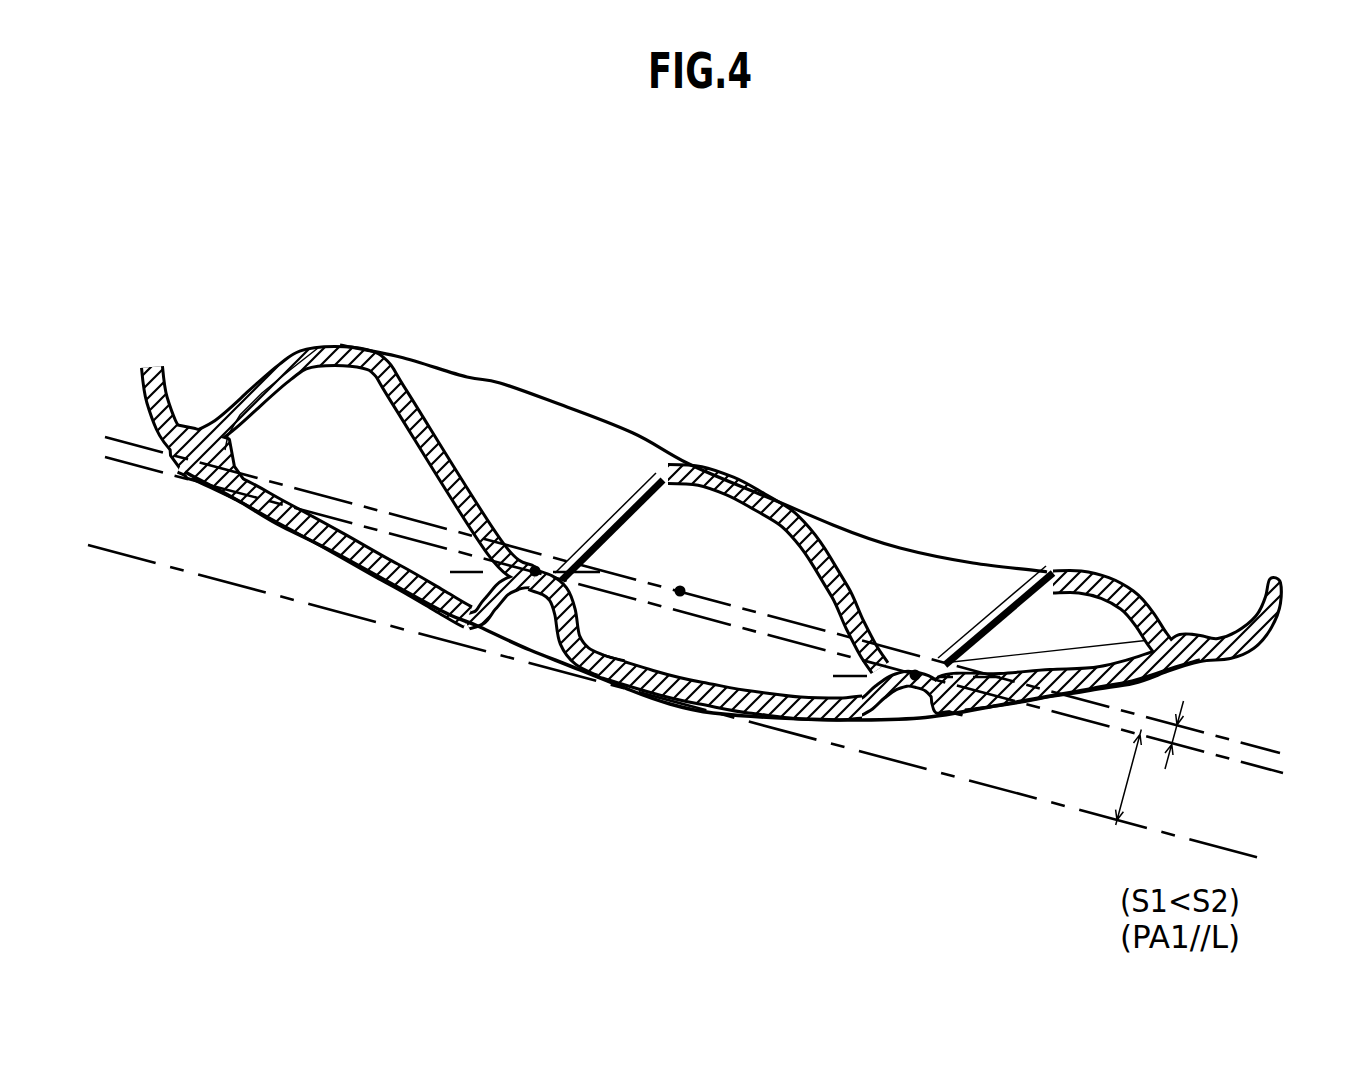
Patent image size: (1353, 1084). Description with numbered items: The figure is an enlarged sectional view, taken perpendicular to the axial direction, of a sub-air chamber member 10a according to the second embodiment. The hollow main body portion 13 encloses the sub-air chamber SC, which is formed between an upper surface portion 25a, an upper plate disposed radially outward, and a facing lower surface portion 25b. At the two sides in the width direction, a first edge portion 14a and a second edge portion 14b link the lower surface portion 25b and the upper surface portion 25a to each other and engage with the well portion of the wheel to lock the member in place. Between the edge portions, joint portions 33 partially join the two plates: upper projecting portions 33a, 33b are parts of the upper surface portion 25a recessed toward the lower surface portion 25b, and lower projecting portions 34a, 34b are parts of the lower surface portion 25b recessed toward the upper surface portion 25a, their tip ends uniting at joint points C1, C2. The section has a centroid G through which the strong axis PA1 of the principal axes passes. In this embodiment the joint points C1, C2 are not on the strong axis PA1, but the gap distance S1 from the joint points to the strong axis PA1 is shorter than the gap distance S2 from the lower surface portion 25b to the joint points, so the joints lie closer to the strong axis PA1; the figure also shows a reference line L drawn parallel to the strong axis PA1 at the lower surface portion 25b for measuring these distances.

The second edge portion 14b is at (152, 366).
The main body portion 13 is at (560, 396).
The upper surface portion 25a is at (740, 481).
The sub-air chamber member 10a is at (909, 462).
The first edge portion 14a is at (1272, 582).
The upper projecting portion 33a is at (432, 447).
The joint portion 33 is at (497, 565).
The lower projecting portion 34a is at (487, 597).
The joint point C1 is at (533, 583).
The centroid G is at (680, 589).
The sub-air chamber SC is at (765, 578).
The lower surface portion 25b is at (650, 699).
The upper projecting portion 33b is at (813, 567).
The lower projecting portion 34b is at (873, 703).
The joint point C2 is at (915, 681).
The gap distance S1 is at (1175, 733).
The gap distance S2 is at (1130, 774).
The strong axis PA1 is at (1273, 737).
The reference line L is at (1263, 773).